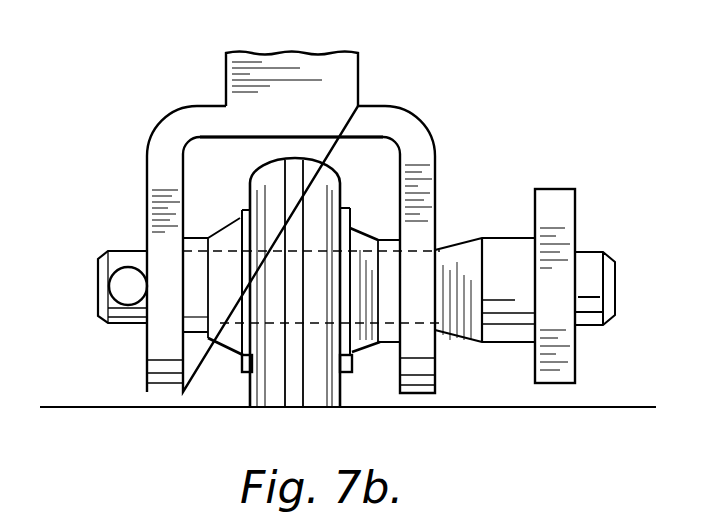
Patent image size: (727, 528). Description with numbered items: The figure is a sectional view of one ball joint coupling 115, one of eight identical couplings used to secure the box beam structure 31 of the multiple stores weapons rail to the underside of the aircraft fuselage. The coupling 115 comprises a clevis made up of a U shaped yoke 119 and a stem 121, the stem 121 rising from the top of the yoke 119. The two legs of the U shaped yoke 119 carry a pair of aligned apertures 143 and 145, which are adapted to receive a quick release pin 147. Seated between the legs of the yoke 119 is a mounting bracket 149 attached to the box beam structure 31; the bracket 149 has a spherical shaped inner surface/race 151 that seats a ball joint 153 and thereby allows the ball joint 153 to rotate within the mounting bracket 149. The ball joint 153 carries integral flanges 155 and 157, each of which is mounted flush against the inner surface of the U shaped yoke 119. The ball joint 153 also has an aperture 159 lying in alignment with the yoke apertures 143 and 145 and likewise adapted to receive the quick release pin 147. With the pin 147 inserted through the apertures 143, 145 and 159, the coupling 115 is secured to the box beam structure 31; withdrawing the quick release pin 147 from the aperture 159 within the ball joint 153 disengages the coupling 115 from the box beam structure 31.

The ball joint coupling 115 is at (116, 82).
The U shaped yoke 119 is at (148, 160).
The stem 121 is at (360, 67).
The aperture 145 is at (150, 341).
The integral flange 157 is at (203, 340).
The aperture 159 is at (305, 318).
The mounting bracket 149 is at (245, 395).
The spherical shaped inner surface/race 151 is at (350, 372).
The ball joint 153 is at (365, 229).
The integral flange 155 is at (388, 230).
The aperture 143 is at (437, 351).
The quick release pin 147 is at (576, 210).
The box beam structure 31 is at (612, 409).